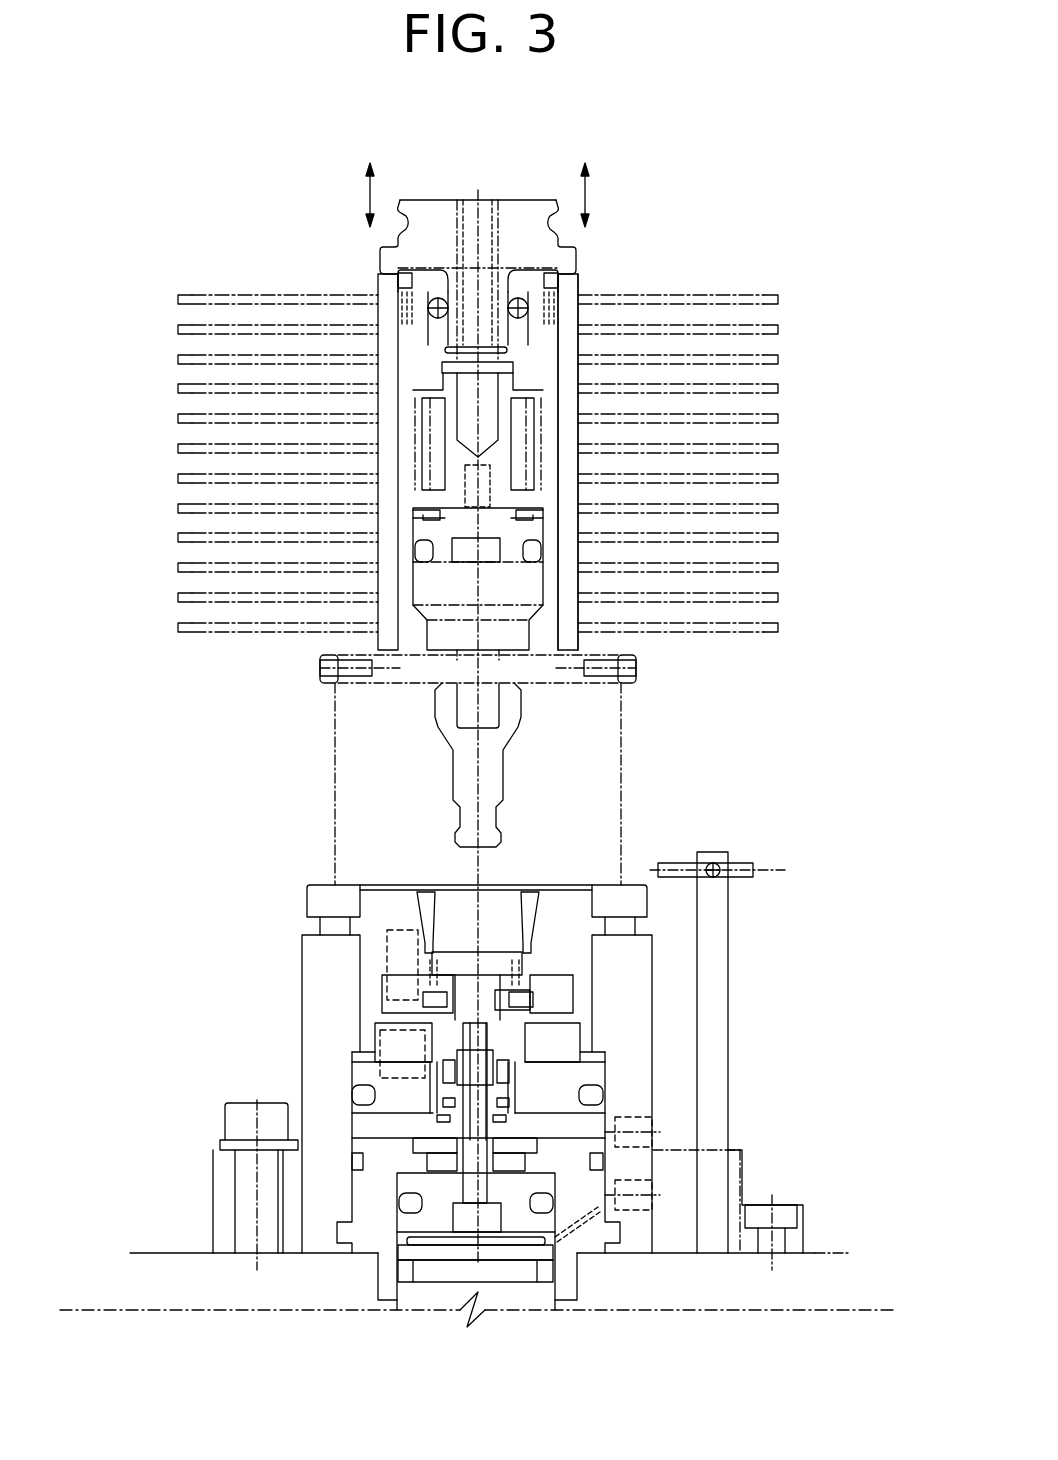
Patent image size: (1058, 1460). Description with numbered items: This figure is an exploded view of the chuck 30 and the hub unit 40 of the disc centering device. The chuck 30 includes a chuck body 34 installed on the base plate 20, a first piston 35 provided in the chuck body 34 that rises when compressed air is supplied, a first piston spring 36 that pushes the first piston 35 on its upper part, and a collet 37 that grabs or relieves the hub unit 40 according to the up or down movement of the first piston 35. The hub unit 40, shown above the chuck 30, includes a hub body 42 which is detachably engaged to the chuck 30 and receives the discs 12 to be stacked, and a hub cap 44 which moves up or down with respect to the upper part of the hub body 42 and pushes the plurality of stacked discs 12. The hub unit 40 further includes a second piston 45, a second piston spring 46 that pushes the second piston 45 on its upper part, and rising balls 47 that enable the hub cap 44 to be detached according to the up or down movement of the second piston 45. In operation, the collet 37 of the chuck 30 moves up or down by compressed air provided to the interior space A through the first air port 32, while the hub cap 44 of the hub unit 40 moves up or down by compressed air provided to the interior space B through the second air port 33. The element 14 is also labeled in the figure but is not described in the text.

The disc 12 is at (725, 296).
The fin mounting plate 14 is at (570, 377).
The base plate 20 is at (683, 1295).
The chuck 30 is at (743, 1043).
The first air port 32 is at (645, 1125).
The second air port 33 is at (645, 1187).
The chuck body 34 is at (307, 1240).
The first piston 35 is at (385, 1095).
The first piston spring 36 is at (390, 1040).
The collet 37 is at (443, 1027).
The hub unit 40 is at (272, 180).
The hub body 42 is at (553, 525).
The hub cap 44 is at (433, 212).
The second piston 45 is at (425, 530).
The second piston spring 46 is at (430, 448).
The rising balls 47 is at (448, 298).
The interior space A is at (358, 1128).
The interior space B is at (425, 594).